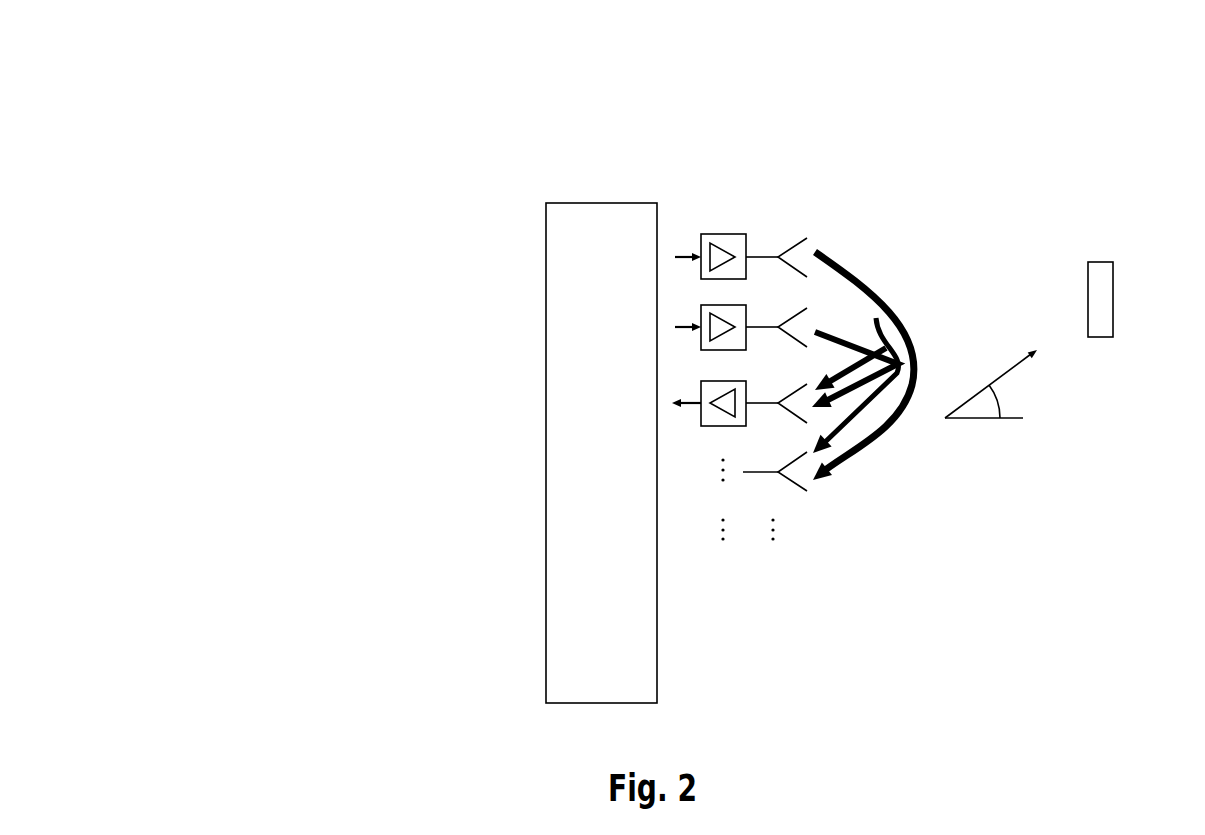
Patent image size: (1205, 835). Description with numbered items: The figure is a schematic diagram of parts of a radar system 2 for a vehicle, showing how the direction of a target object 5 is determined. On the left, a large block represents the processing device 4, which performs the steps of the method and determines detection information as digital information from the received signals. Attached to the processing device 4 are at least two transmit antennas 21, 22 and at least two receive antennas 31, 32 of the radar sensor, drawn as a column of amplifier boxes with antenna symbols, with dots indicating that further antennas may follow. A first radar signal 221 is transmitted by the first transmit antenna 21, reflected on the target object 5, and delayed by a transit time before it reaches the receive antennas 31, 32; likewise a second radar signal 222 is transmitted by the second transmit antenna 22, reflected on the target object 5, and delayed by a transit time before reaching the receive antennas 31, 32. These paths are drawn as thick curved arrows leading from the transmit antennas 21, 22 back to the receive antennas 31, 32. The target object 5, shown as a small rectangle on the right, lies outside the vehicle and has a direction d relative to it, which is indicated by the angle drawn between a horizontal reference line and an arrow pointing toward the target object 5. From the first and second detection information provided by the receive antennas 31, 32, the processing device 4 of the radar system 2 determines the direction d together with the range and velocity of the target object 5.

The radar system 2 is at (104, 87).
The processing device 4 is at (546, 463).
The target object 5 is at (1113, 312).
The first transmit antenna 21 is at (741, 268).
The second transmit antenna 22 is at (741, 339).
The receive antenna 31 is at (739, 414).
The receive antenna 32 is at (775, 483).
The first radar signal 221 is at (882, 283).
The second radar signal 222 is at (882, 456).
The direction d is at (991, 384).